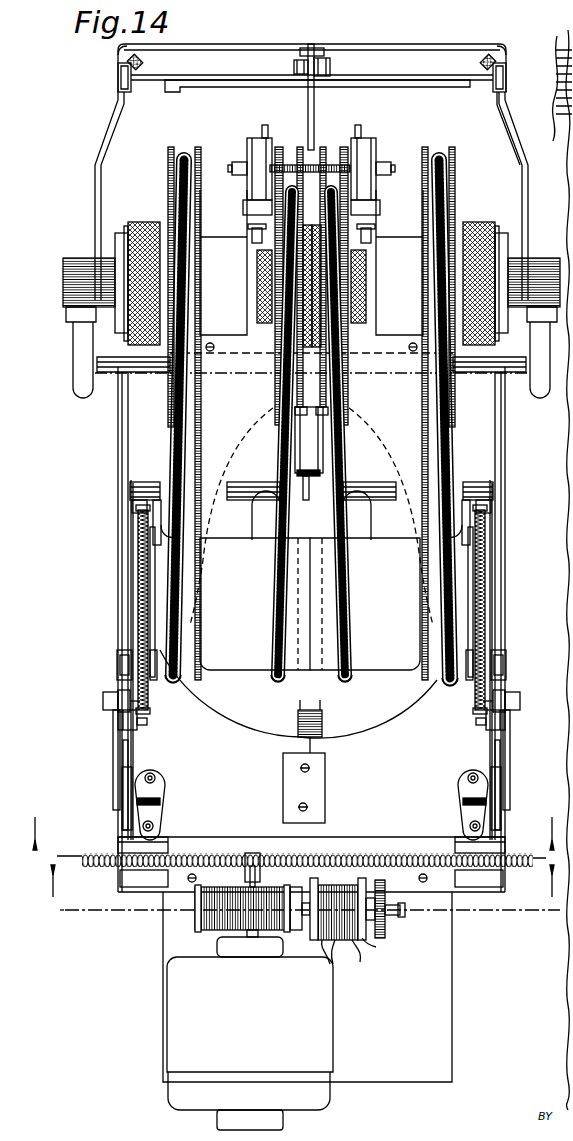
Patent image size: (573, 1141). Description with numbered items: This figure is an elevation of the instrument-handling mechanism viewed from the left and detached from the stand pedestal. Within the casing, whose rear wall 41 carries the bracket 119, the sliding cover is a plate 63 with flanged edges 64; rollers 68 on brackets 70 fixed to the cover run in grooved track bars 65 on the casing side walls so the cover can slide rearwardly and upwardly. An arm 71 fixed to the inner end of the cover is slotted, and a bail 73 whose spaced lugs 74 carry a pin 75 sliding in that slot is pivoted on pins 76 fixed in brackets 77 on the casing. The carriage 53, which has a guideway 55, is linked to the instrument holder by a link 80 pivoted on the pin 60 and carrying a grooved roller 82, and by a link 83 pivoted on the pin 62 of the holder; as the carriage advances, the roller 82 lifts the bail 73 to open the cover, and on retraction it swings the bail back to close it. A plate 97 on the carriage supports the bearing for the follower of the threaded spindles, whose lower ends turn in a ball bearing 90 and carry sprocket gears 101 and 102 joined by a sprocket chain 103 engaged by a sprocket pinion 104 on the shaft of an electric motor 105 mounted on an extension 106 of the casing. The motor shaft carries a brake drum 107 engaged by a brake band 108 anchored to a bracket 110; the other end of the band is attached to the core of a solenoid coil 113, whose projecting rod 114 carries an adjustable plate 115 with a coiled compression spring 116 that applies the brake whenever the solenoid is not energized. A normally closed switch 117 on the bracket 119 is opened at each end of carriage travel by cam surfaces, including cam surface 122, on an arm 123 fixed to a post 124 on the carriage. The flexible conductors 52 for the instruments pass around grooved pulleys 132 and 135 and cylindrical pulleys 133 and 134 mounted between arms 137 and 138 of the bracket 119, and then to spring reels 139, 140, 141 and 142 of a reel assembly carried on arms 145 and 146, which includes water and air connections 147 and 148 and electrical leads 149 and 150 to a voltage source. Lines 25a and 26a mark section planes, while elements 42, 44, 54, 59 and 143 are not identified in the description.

The brackets 70 is at (245, 47).
The arm 71 is at (314, 50).
The plate 63 is at (456, 45).
The flanged edges 64 is at (118, 52).
The track bars 65 is at (118, 80).
The rollers 68 is at (150, 62).
The pin 75 is at (294, 66).
The lugs 74 is at (330, 66).
The bail 73 is at (236, 84).
The electrical lead 150 is at (257, 138).
The electrical lead 149 is at (370, 138).
The rear wall 41 is at (480, 128).
The support plate 143 is at (218, 234).
The arm 146 is at (128, 232).
The arm 145 is at (500, 240).
The air connection 148 is at (73, 348).
The water connection 147 is at (540, 394).
The spring reel 142 is at (204, 390).
The spring reel 141 is at (275, 398).
The spring reel 139 is at (362, 386).
The spring reel 140 is at (348, 405).
The flexible conductors 52 is at (192, 440).
The bracket 119 is at (255, 430).
The switch 117 is at (322, 468).
The arm 42 is at (385, 480).
The lever 44 is at (156, 472).
The pin 62 is at (130, 488).
The spring 59 is at (140, 632).
The link 83 is at (132, 545).
The arm 138 is at (207, 612).
The arm 137 is at (420, 612).
The grooved roller 82 is at (117, 663).
The pins 76 is at (103, 700).
The link 80 is at (118, 721).
The pin 60 is at (147, 722).
The brackets 77 is at (122, 742).
The side plate 54 is at (118, 752).
The guideway 55 is at (132, 776).
The plate 97 is at (166, 792).
The grooved pulley 135 is at (190, 682).
The cylindrical pulley 134 is at (272, 684).
The cylindrical pulley 133 is at (356, 690).
The grooved pulley 132 is at (426, 684).
The arm 123 is at (298, 716).
The cam surface 122 is at (322, 734).
The post 124 is at (283, 770).
The carriage 53 is at (357, 754).
The ball bearing 90 is at (120, 845).
The sprocket chain 103 is at (372, 850).
The sprocket pinion 104 is at (256, 866).
The sprocket gear 102 is at (120, 886).
The sprocket gear 101 is at (503, 887).
The section line 25a is at (288, 857).
The section line 26a is at (288, 917).
The brake band 108 is at (252, 908).
The bracket 110 is at (330, 945).
The plate 115 is at (386, 920).
The rod 114 is at (400, 908).
The coiled compression spring 116 is at (378, 946).
The solenoid coil 113 is at (352, 956).
The extension 106 is at (163, 930).
The brake drum 107 is at (210, 946).
The electric motor 105 is at (167, 1020).